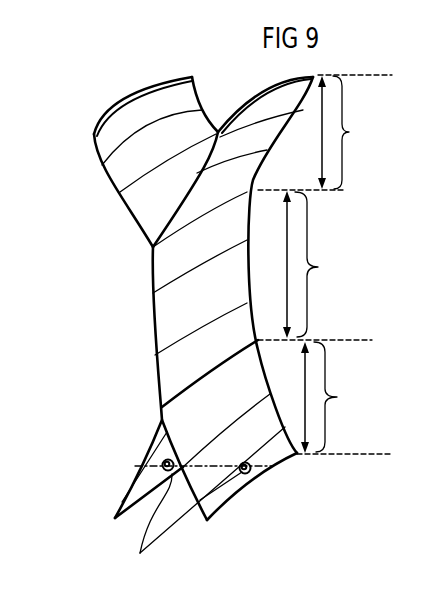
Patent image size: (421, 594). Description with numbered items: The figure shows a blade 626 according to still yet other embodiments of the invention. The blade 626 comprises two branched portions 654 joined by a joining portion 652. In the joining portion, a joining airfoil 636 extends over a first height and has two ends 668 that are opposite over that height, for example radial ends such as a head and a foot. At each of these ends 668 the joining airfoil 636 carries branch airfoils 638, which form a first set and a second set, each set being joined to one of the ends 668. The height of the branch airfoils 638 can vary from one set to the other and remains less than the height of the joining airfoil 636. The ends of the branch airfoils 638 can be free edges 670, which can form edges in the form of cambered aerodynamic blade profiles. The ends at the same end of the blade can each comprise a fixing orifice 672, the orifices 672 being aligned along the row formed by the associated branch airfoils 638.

The blade 626 is at (80, 323).
The joining airfoil 636 is at (153, 319).
The branch airfoils 638 is at (262, 108).
The joining portion 652 is at (315, 265).
The branched portions 654 is at (335, 264).
The ends 668 is at (173, 232).
The free edges 670 is at (103, 117).
The fixing orifice 672 is at (204, 504).